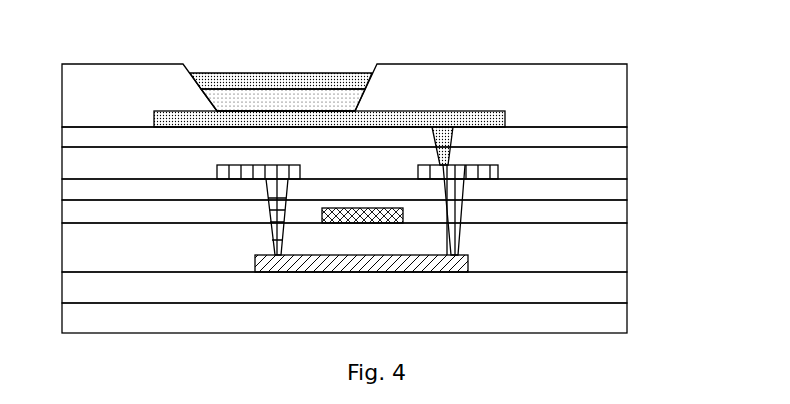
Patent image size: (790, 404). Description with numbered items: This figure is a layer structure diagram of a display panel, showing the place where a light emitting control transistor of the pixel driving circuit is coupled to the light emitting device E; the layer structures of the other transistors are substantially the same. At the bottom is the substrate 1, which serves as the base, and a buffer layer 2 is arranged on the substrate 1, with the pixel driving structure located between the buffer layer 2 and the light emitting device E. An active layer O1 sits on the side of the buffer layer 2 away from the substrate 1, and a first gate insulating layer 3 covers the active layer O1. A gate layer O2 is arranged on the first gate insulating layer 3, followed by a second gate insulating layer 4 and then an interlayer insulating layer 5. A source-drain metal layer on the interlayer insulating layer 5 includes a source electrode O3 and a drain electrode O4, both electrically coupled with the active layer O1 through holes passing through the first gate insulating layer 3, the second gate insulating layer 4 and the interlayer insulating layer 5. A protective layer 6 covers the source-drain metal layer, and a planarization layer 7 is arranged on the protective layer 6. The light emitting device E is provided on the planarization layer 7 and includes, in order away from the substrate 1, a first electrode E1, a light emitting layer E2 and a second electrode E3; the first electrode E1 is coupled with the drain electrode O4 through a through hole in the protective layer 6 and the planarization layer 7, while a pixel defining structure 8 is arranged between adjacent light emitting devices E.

The substrate 1 is at (605, 323).
The buffer layer 2 is at (605, 292).
The first gate insulating layer 3 is at (605, 248).
The second gate insulating layer 4 is at (605, 216).
The interlayer insulating layer 5 is at (605, 188).
The protective layer 6 is at (605, 163).
The planarization layer 7 is at (605, 138).
The pixel defining structure 8 is at (605, 102).
The active layer O1 is at (466, 265).
The gate layer O2 is at (402, 216).
The source electrode O3 is at (297, 173).
The drain electrode O4 is at (431, 172).
The light emitting device E is at (357, 45).
The first electrode E1 is at (313, 118).
The light emitting layer E2 is at (277, 100).
The second electrode E3 is at (255, 73).